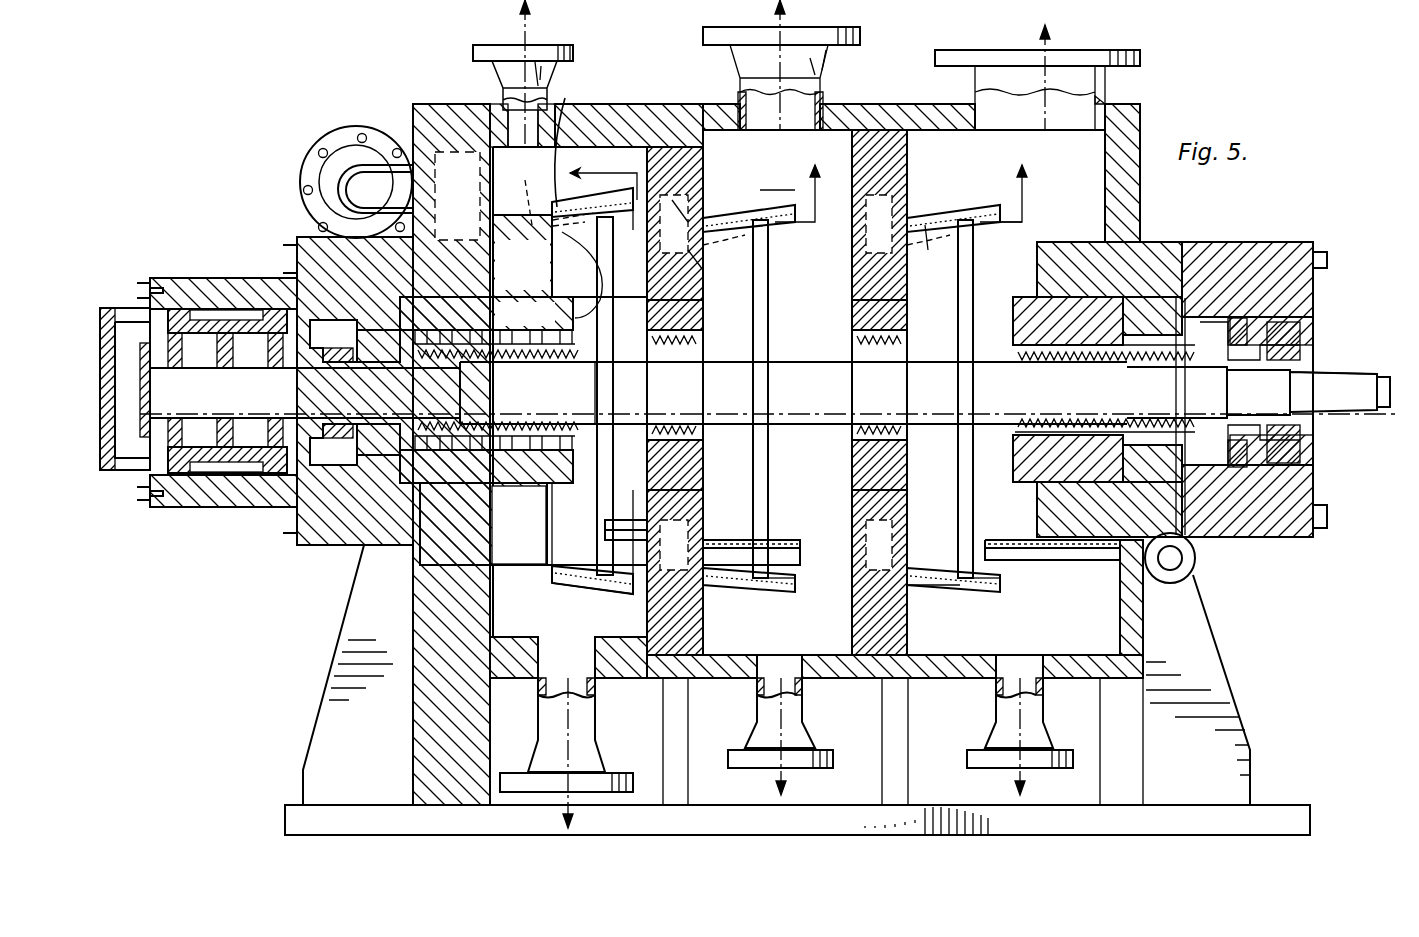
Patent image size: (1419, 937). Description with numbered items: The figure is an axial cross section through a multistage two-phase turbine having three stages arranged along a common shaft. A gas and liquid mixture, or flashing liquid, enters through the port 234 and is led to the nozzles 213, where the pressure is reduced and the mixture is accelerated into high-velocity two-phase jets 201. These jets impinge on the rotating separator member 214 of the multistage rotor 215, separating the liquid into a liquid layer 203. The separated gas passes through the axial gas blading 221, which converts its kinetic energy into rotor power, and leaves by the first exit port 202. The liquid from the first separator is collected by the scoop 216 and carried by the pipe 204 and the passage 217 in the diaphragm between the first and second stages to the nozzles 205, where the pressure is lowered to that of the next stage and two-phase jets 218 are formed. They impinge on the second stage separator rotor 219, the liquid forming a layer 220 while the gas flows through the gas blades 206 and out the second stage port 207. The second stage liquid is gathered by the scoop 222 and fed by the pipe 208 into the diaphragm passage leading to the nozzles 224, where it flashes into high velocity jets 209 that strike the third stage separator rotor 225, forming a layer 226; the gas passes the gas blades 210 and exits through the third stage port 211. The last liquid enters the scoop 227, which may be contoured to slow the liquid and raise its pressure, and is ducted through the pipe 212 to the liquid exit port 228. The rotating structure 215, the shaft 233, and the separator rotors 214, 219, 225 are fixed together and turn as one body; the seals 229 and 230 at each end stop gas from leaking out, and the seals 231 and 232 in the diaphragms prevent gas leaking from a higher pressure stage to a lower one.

The two-phase jets 201 is at (562, 250).
The first exit port 202 is at (510, 52).
The liquid layer 203 is at (612, 232).
The pipe 204 is at (630, 520).
The nozzles 205 is at (672, 200).
The gas blades 206 is at (770, 225).
The second stage port 207 is at (825, 60).
The pipe 208 is at (798, 527).
The high velocity jets 209 is at (923, 230).
The gas blades 210 is at (975, 222).
The third stage port 211 is at (1108, 78).
The pipe 212 is at (1073, 562).
The nozzles 213 is at (568, 192).
The rotating separator member 214 is at (579, 138).
The multistage rotor 215 is at (610, 335).
The scoop 216 is at (625, 590).
The passage 217 is at (692, 275).
The two-phase jets 218 is at (712, 228).
The second stage separator rotor 219 is at (780, 195).
The liquid layer 220 is at (723, 567).
The gas blading 221 is at (592, 280).
The scoop 222 is at (778, 578).
The nozzles 224 is at (895, 195).
The third stage separator rotor 225 is at (1003, 195).
The liquid layer 226 is at (923, 567).
The scoop 227 is at (992, 580).
The liquid exit port 228 is at (1195, 568).
The seal 229 is at (550, 367).
The seal 230 is at (1020, 363).
The seal 231 is at (703, 350).
The seal 232 is at (867, 360).
The shaft 233 is at (1348, 372).
The port 234 is at (303, 158).